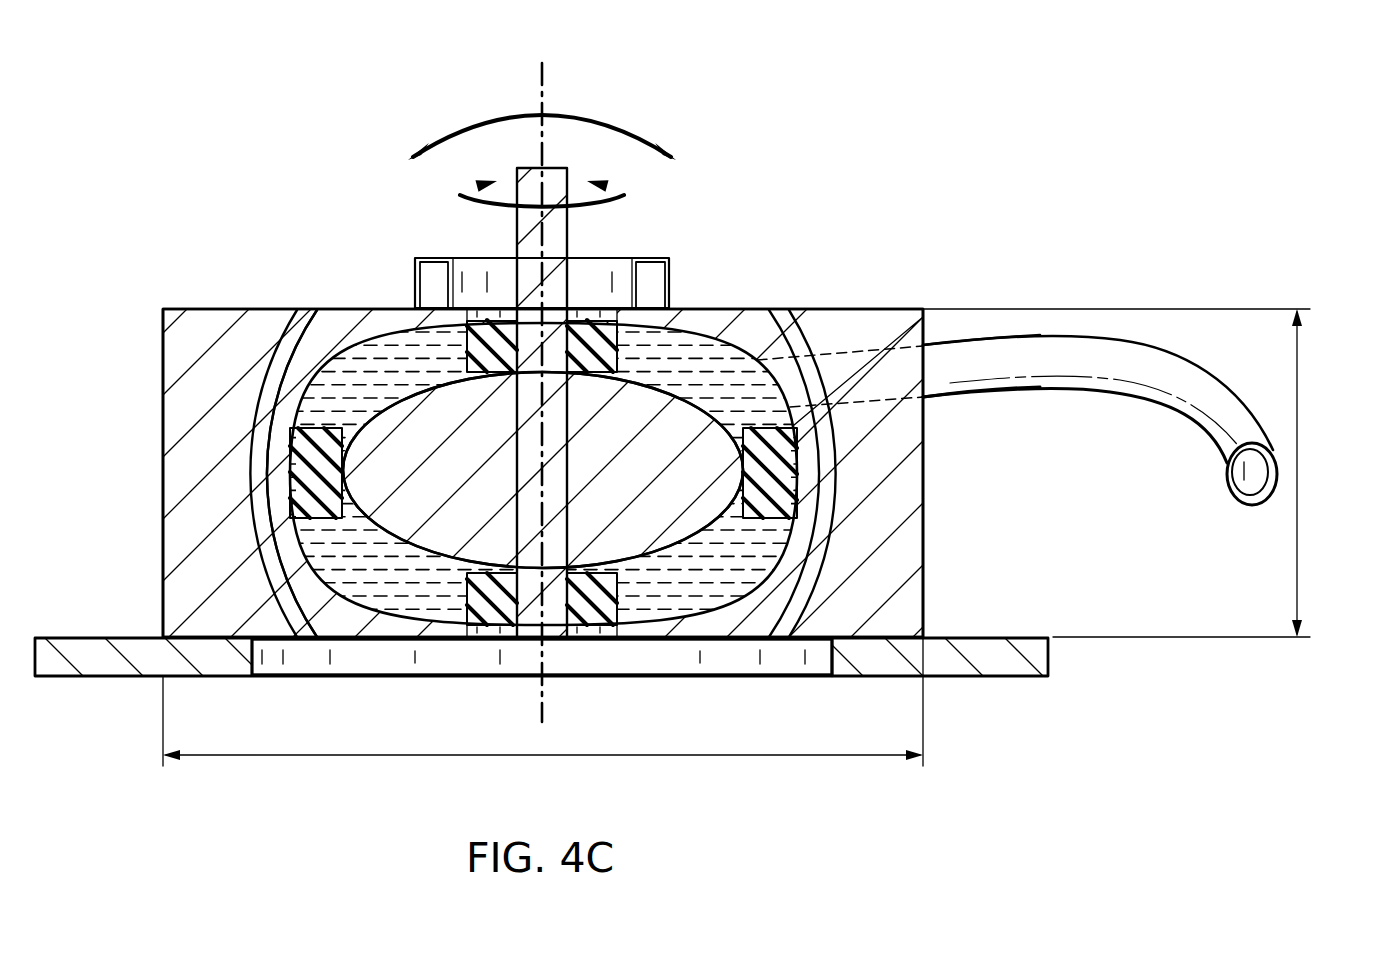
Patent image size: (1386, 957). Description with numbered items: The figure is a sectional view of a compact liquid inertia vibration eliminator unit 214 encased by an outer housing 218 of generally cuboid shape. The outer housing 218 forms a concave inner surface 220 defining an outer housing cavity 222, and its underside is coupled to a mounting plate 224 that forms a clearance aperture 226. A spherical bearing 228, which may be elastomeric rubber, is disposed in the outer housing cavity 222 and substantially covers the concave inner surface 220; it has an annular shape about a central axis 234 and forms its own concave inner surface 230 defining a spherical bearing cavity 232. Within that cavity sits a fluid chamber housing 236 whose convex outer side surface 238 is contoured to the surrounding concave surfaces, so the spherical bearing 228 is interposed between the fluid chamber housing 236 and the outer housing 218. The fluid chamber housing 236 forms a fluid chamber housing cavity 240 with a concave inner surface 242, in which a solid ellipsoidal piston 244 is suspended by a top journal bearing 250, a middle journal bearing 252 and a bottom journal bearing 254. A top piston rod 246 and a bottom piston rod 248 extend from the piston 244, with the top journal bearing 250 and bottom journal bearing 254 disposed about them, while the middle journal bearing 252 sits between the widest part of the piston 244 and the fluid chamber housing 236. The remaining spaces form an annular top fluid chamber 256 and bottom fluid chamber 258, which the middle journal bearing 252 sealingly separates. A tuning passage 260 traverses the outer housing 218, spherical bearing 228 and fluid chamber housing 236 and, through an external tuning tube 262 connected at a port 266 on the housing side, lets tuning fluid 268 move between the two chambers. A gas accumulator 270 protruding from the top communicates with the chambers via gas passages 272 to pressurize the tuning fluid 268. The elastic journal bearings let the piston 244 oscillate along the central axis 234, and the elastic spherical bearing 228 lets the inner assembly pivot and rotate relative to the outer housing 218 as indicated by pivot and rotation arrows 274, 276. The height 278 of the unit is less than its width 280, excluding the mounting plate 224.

The compact liquid inertia vibration eliminator unit 214 is at (171, 126).
The outer housing 218 is at (214, 309).
The concave inner surface 220 is at (294, 637).
The outer housing cavity 222 is at (332, 640).
The mounting plate 224 is at (108, 677).
The clearance aperture 226 is at (832, 660).
The spherical bearing 228 is at (262, 400).
The concave inner surface 230 is at (332, 322).
The spherical bearing cavity 232 is at (332, 322).
The central axis 234 is at (538, 72).
The fluid chamber housing 236 is at (770, 350).
The convex outer side surface 238 is at (808, 333).
The fluid chamber housing cavity 240 is at (668, 637).
The concave inner surface 242 is at (680, 637).
The piston 244 is at (386, 440).
The top piston rod 246 is at (572, 279).
The bottom piston rod 248 is at (490, 640).
The top journal bearing 250 is at (481, 357).
The middle journal bearing 252 is at (290, 468).
The bottom journal bearing 254 is at (510, 577).
The top fluid chamber 256 is at (722, 347).
The bottom fluid chamber 258 is at (657, 567).
The tuning passage 260 is at (843, 407).
The external tuning tube 262 is at (1093, 388).
The port 266 is at (926, 378).
The tuning fluid 268 is at (426, 553).
The gas accumulator 270 is at (446, 260).
The gas passage 272 is at (660, 327).
The pivot arrow 274 is at (580, 118).
The rotation arrow 276 is at (632, 200).
The height 278 is at (1298, 518).
The width 280 is at (541, 765).